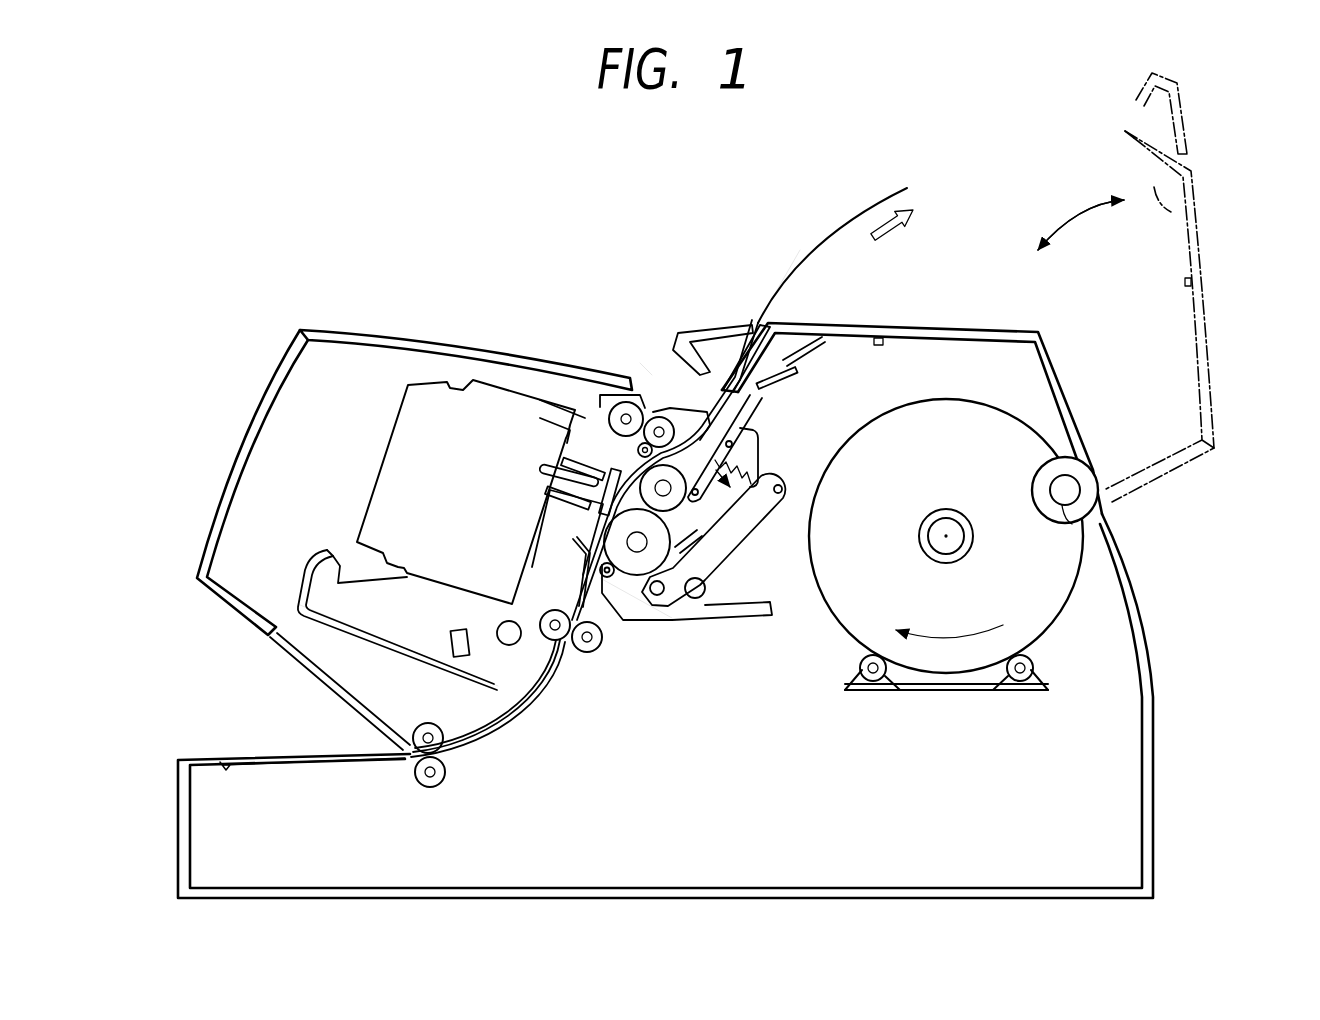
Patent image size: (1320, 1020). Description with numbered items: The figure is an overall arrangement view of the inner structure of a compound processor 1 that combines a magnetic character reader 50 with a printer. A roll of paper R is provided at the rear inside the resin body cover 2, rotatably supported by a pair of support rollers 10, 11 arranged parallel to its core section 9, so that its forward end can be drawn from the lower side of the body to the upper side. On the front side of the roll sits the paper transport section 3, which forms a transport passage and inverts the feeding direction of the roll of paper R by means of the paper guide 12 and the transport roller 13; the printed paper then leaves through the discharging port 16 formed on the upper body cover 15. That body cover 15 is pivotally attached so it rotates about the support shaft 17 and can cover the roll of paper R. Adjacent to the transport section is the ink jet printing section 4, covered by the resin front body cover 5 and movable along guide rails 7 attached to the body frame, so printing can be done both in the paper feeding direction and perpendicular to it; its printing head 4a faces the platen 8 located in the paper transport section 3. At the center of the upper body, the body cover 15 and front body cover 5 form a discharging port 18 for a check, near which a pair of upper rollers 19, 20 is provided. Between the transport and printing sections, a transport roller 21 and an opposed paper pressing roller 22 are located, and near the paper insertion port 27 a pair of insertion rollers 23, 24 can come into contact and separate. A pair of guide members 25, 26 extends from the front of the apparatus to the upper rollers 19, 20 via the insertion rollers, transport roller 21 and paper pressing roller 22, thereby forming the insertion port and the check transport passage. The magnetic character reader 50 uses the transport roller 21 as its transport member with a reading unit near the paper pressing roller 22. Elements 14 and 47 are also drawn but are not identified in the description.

The compound processor 1 is at (353, 180).
The body cover 2 is at (1155, 688).
The paper transport section 3 is at (714, 634).
The printing section 4 is at (427, 386).
The printing head 4a is at (572, 450).
The front body cover 5 is at (365, 333).
The guide rails 7 is at (520, 708).
The platen 8 is at (624, 405).
The core section 9 is at (968, 546).
The support roller 10 is at (858, 667).
The support roller 11 is at (1040, 664).
The paper guide 12 is at (768, 538).
The transport roller 13 is at (634, 572).
The spring arm 14 is at (695, 520).
The body cover 15 is at (918, 323).
The discharging port 16 is at (757, 316).
The support shaft 17 is at (1105, 521).
The discharging port 18 is at (640, 362).
The upper roller 19 is at (662, 416).
The upper roller 20 is at (626, 402).
The transport roller 21 is at (598, 650).
The paper pressing roller 22 is at (558, 642).
The insertion roller 23 is at (437, 782).
The insertion roller 24 is at (418, 746).
The guide member 25 is at (508, 736).
The guide member 26 is at (470, 728).
The paper insertion port 27 is at (363, 743).
The paper guide member 47 is at (783, 360).
The magnetic character reader 50 is at (636, 724).
The roll of paper R is at (848, 222).